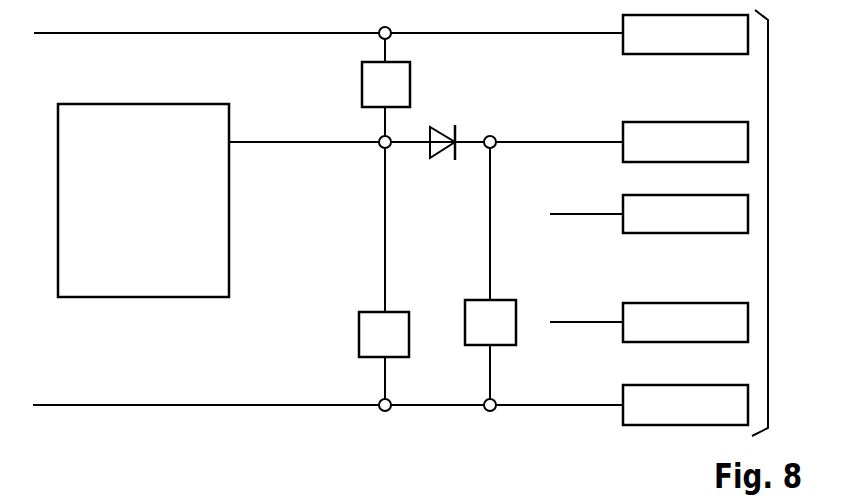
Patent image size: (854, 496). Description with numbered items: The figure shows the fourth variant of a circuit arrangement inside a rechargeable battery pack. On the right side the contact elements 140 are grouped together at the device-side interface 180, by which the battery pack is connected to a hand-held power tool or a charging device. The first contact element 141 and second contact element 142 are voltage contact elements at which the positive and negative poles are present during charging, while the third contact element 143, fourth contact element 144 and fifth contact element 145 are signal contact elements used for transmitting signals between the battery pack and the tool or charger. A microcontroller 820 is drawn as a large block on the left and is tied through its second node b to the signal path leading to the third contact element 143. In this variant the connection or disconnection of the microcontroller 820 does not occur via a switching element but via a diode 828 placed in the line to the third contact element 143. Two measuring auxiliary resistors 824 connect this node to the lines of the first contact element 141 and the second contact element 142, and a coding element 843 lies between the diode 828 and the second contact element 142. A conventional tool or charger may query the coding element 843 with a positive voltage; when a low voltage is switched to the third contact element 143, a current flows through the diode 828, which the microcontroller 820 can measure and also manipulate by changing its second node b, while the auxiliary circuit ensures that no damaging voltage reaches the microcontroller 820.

The microcontroller 820 is at (133, 103).
The measuring auxiliary resistor 824 is at (384, 219).
The diode 828 is at (430, 161).
The coding element 843 is at (490, 273).
The contact elements 140 is at (685, 220).
The first contact element 141 is at (685, 34).
The second contact element 142 is at (685, 405).
The third contact element 143 is at (685, 142).
The fourth contact element 144 is at (685, 214).
The fifth contact element 145 is at (685, 322).
The device-side interface 180 is at (768, 222).